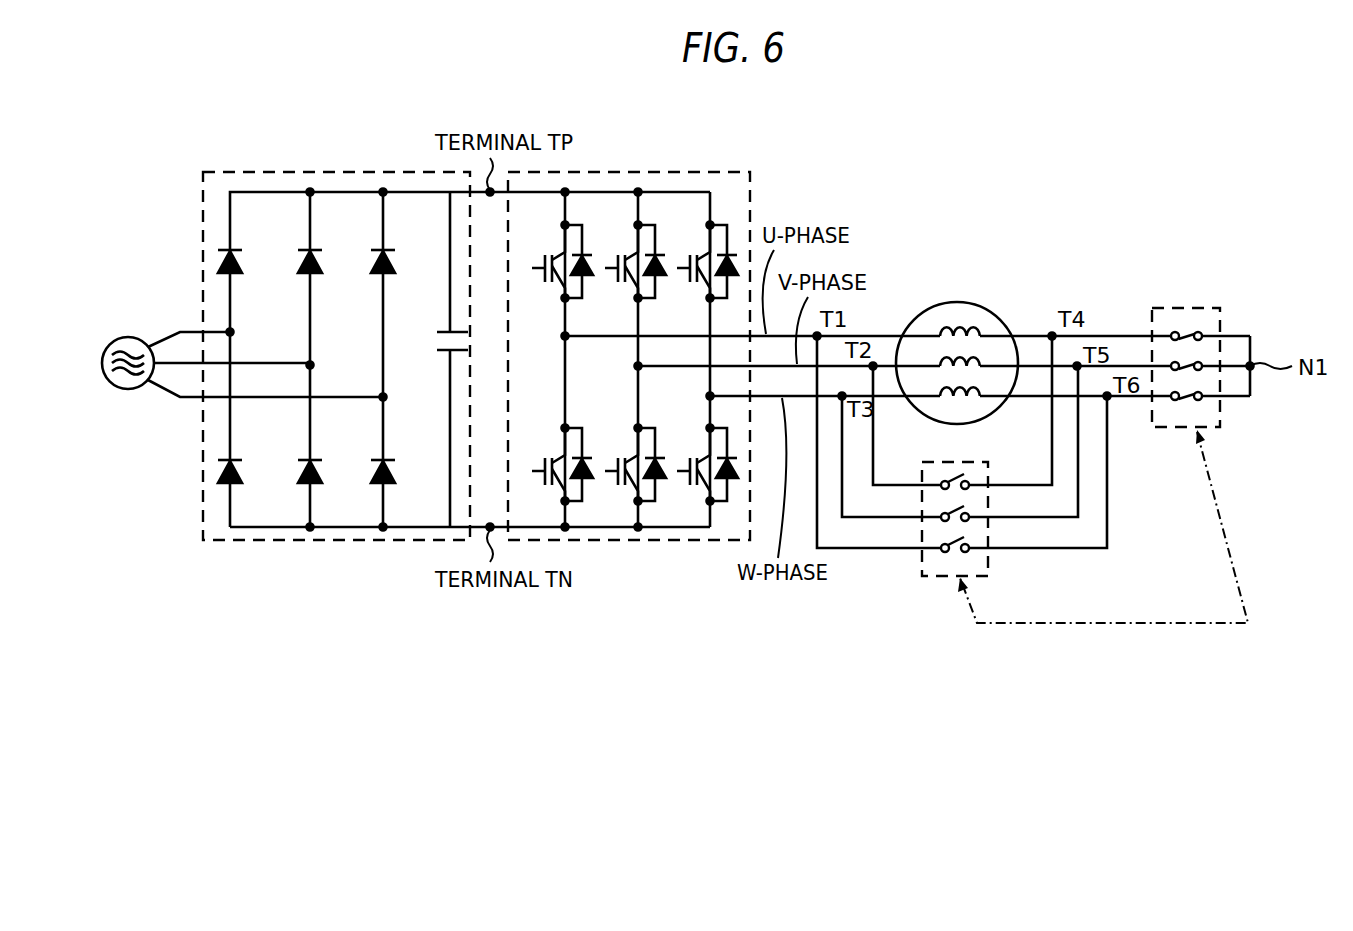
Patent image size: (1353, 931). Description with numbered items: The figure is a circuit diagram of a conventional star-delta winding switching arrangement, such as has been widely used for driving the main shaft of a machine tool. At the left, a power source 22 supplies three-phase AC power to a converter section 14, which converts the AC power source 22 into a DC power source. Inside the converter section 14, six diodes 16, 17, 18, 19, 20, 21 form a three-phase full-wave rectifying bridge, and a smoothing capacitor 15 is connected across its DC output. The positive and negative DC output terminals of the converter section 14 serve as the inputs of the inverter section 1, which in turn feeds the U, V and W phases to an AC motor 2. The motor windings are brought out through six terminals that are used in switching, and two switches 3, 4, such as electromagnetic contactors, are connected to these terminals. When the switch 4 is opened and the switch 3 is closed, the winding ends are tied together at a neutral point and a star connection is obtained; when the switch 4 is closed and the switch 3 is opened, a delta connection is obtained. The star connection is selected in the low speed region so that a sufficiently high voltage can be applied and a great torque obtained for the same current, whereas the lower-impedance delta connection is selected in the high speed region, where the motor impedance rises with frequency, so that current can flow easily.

The inverter section 1 is at (655, 172).
The AC motor 2 is at (945, 304).
The switch 3 is at (1220, 415).
The switch 4 is at (988, 565).
The converter section 14 is at (240, 172).
The smoothing capacitor 15 is at (437, 349).
The diode 16 is at (234, 249).
The diode 17 is at (314, 249).
The diode 18 is at (387, 249).
The diode 19 is at (234, 459).
The diode 20 is at (314, 459).
The diode 21 is at (387, 459).
The power source 22 is at (125, 390).